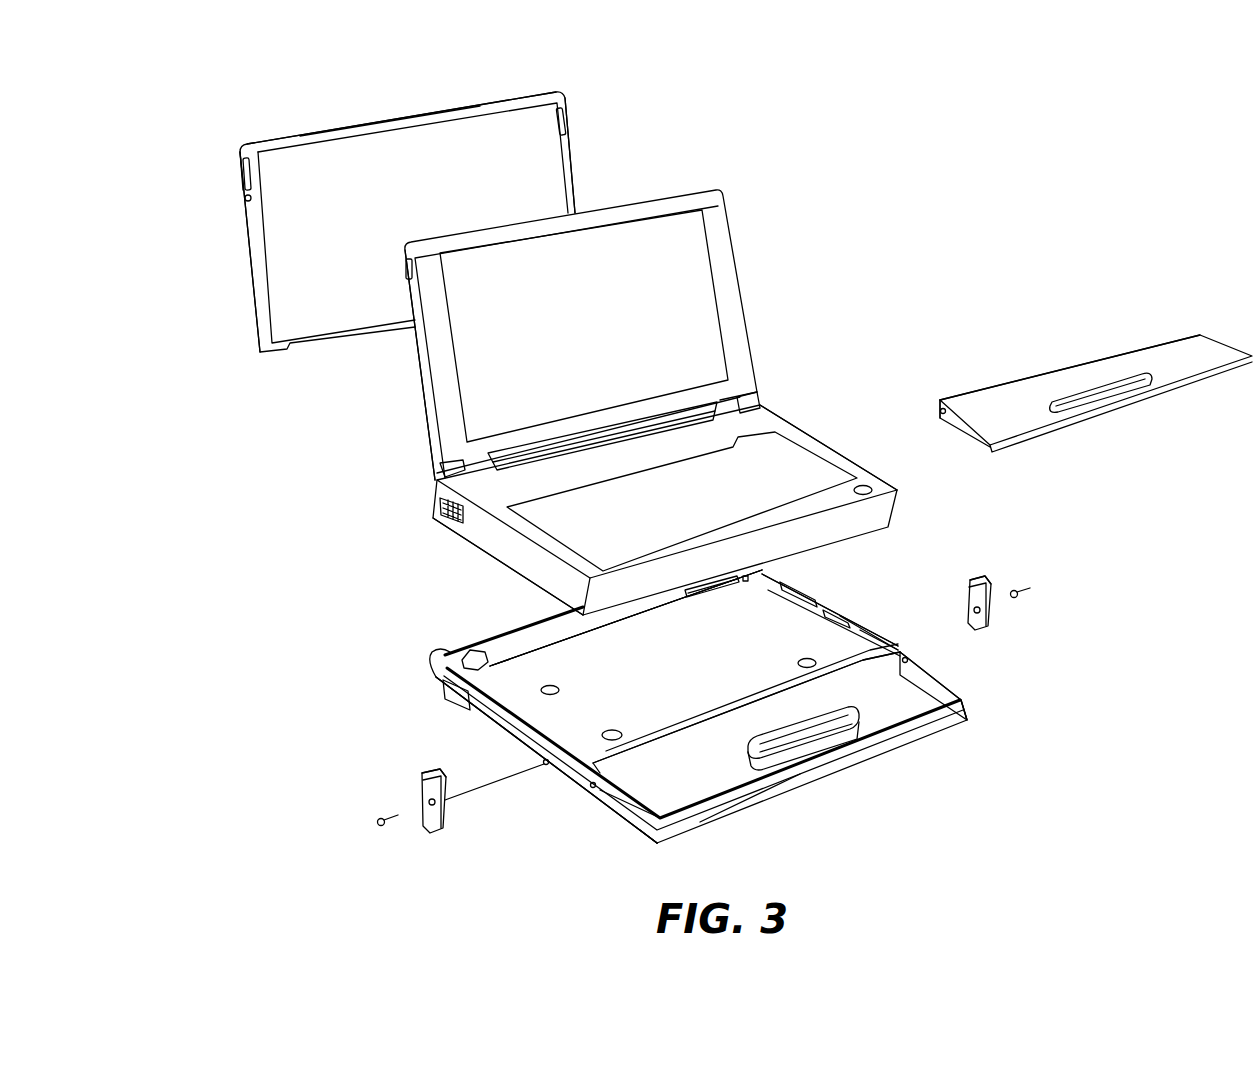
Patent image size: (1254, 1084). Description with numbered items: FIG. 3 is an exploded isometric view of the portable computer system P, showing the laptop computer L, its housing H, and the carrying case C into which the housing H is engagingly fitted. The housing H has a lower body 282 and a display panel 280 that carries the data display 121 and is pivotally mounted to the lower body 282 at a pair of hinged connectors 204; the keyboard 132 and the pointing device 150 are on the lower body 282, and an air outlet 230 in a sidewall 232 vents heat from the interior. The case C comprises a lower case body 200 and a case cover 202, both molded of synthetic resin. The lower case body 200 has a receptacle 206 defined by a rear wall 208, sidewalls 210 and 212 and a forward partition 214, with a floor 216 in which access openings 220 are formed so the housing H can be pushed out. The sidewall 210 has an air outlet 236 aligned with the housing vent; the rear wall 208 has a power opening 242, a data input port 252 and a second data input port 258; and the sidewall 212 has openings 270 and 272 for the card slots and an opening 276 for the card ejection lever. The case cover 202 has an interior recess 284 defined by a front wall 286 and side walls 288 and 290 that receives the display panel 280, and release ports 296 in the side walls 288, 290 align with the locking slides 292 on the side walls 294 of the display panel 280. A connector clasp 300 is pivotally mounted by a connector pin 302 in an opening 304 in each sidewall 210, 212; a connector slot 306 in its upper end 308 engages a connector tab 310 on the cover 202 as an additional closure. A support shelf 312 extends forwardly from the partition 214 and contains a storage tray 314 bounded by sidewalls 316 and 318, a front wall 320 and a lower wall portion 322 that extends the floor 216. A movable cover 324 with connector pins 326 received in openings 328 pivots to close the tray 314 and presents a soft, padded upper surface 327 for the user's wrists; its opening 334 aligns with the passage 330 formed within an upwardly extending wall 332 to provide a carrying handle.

The data display 121 is at (612, 313).
The keyboard 132 is at (710, 503).
The pointing device 150 is at (870, 485).
The lower case body 200 is at (458, 716).
The case cover 202 is at (583, 136).
The hinged connectors 204 is at (760, 400).
The receptacle 206 is at (866, 630).
The rear wall 208 is at (512, 644).
The sidewall 210 is at (490, 730).
The sidewall 212 is at (880, 640).
The partition 214 is at (628, 792).
The floor 216 is at (720, 693).
The access openings 220 is at (613, 728).
The air outlet 230 is at (438, 509).
The sidewall 232 is at (470, 531).
The air outlet 236 is at (440, 693).
The opening 242 is at (466, 652).
The data input port 252 is at (700, 600).
The second data input port 258 is at (745, 584).
The opening 270 is at (795, 582).
The opening 272 is at (786, 590).
The opening 276 is at (832, 612).
The display panel 280 is at (738, 252).
The lower body 282 is at (845, 447).
The interior recess 284 is at (437, 183).
The front wall 286 is at (420, 105).
The side wall 288 is at (250, 273).
The side wall 290 is at (577, 205).
The slides 292 is at (405, 268).
The side walls 294 is at (416, 340).
The release ports 296 is at (570, 117).
The connector clasp 300 is at (433, 834).
The connector pin 302 is at (372, 815).
The opening 304 is at (908, 658).
The connector slot 306 is at (436, 790).
The upper end 308 is at (420, 782).
The connector tab 310 is at (244, 205).
The support shelf 312 is at (958, 666).
The storage tray 314 is at (780, 792).
The sidewall 316 is at (647, 826).
The sidewall 318 is at (965, 692).
The front wall 320 is at (905, 740).
The lower wall portion 322 is at (912, 713).
The movable cover 324 is at (1155, 333).
The connector pins 326 is at (943, 415).
The cover face 327 is at (1022, 418).
The openings 328 is at (592, 790).
The passage 330 is at (838, 725).
The upwardly extending wall 332 is at (768, 768).
The opening 334 is at (1115, 385).
The housing H is at (478, 566).
The laptop computer L is at (795, 360).
The portable computer system P is at (925, 210).
The carrying case C is at (268, 654).